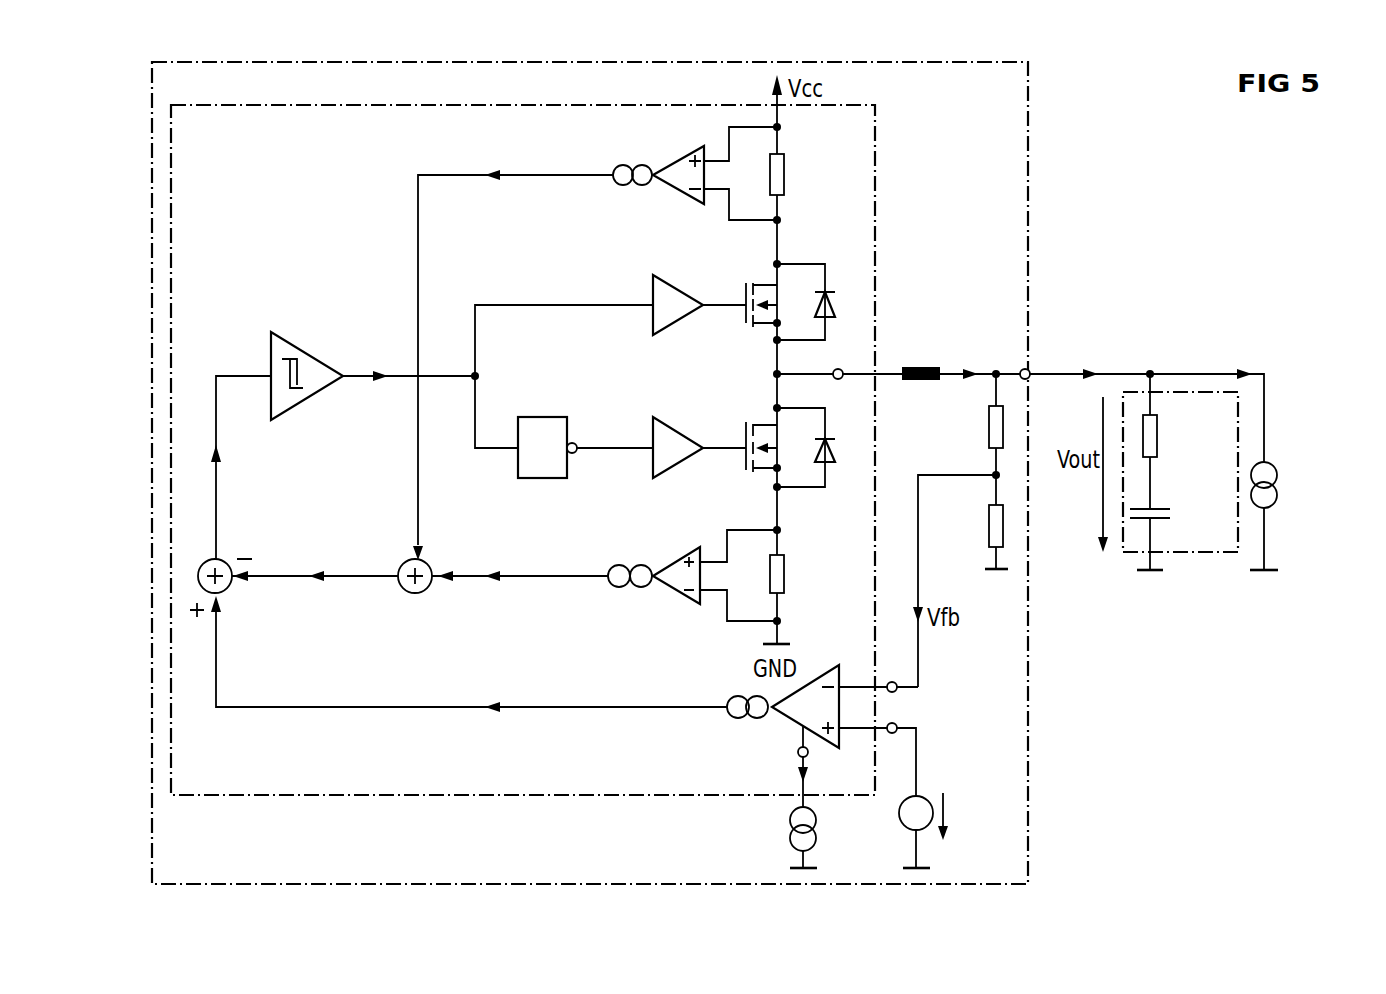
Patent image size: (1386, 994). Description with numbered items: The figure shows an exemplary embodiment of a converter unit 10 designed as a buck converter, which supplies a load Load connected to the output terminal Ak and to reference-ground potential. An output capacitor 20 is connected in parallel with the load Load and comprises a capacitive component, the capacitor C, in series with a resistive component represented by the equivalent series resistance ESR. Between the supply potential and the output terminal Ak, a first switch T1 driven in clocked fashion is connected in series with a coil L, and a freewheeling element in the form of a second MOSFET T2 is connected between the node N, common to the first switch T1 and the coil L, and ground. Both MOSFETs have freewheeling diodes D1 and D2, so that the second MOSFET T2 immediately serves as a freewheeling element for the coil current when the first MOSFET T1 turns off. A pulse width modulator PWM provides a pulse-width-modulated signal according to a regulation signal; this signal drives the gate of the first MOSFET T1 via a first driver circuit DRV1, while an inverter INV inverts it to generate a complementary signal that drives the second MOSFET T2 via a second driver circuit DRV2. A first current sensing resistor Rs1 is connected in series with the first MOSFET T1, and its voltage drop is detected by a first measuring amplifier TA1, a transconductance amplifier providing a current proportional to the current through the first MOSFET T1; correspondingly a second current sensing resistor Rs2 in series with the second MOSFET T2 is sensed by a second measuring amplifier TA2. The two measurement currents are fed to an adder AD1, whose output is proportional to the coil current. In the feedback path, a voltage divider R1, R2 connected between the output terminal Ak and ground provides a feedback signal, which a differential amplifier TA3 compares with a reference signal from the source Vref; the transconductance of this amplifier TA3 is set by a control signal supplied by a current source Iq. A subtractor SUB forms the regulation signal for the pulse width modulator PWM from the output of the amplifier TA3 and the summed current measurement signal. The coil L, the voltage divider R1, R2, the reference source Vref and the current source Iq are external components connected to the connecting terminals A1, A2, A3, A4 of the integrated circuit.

The converter unit 10 is at (1029, 212).
The output capacitor 20 is at (1180, 495).
The first measuring amplifier TA1 is at (683, 155).
The second measuring amplifier TA2 is at (672, 601).
The differential amplifier TA3 is at (803, 683).
The first current sensing resistor Rs1 is at (786, 168).
The second current sensing resistor Rs2 is at (786, 573).
The first switch T1 is at (745, 292).
The second MOSFET T2 is at (745, 432).
The freewheeling diode D1 is at (832, 318).
The freewheeling diode D2 is at (832, 463).
The first driver circuit DRV1 is at (680, 318).
The second driver circuit DRV2 is at (680, 462).
The node N is at (793, 375).
The connecting terminal A1 is at (862, 391).
The connecting terminal A2 is at (878, 673).
The connecting terminal A3 is at (877, 759).
The connecting terminal A4 is at (775, 766).
The output terminal Ak is at (1028, 369).
The coil L is at (920, 366).
The voltage divider resistor R1 is at (989, 418).
The voltage divider resistor R2 is at (989, 528).
The equivalent series resistance ESR is at (1158, 434).
The capacitor C is at (1196, 584).
The load Load is at (1240, 472).
The reference signal voltage source Vref is at (944, 830).
The current source Iq is at (790, 822).
The pulse width modulator PWM is at (307, 357).
The inverter INV is at (543, 417).
The subtractor SUB is at (227, 588).
The adder AD1 is at (415, 595).